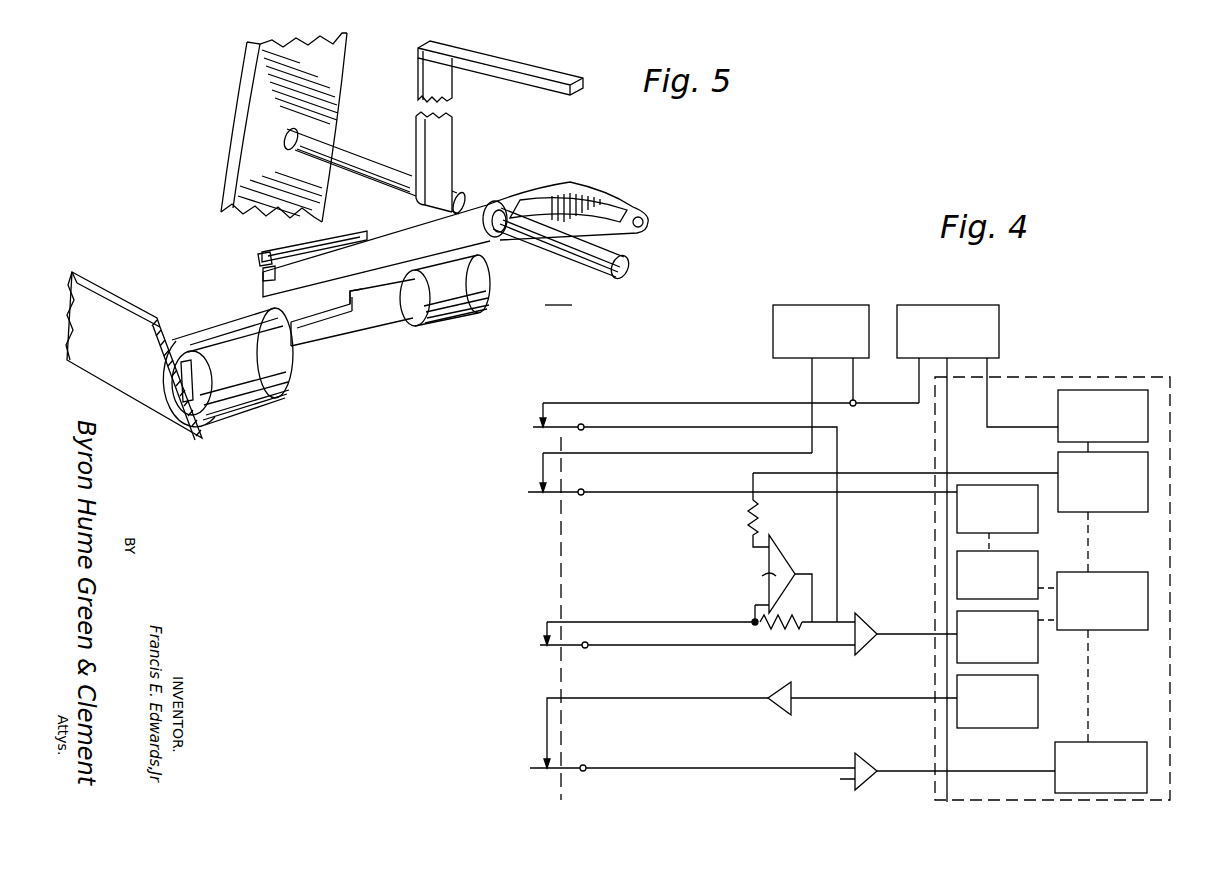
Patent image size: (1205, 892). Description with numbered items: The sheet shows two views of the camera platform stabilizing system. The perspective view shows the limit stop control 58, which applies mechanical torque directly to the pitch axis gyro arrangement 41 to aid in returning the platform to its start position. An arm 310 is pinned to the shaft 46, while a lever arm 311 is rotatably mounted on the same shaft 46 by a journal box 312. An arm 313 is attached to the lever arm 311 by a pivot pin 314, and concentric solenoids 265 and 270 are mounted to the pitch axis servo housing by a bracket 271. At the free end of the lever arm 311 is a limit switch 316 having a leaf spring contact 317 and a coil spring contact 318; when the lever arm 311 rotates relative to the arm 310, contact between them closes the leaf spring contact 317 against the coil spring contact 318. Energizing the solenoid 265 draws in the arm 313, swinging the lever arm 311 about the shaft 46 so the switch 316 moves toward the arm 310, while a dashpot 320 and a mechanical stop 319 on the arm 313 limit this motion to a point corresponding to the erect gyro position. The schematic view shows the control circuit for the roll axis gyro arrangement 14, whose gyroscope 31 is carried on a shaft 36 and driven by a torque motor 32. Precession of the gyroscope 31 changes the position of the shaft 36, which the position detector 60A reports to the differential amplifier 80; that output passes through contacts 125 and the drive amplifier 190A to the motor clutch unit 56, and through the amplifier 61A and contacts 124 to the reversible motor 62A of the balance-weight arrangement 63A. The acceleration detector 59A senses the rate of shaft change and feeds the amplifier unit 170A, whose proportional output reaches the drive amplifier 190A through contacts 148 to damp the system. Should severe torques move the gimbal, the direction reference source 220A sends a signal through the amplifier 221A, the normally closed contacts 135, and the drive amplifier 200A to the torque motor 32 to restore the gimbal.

In FIG. 5, the pitch axis gyro arrangement 41 is at (247, 172).
In FIG. 5, the shaft 46 is at (392, 149).
In FIG. 5, the arm 310 is at (541, 58).
In FIG. 5, the lever arm 311 is at (557, 188).
In FIG. 5, the journal box 312 is at (494, 205).
In FIG. 5, the pivot pin 314 is at (643, 222).
In FIG. 5, the limit switch 316 is at (261, 259).
In FIG. 5, the leaf spring contact 317 is at (329, 238).
In FIG. 5, the coil spring contact 318 is at (263, 273).
In FIG. 5, the mechanical stop 319 is at (350, 296).
In FIG. 5, the dashpot 320 is at (463, 310).
In FIG. 5, the arm 313 is at (389, 317).
In FIG. 5, the solenoid 270 is at (211, 340).
In FIG. 5, the bracket 271 is at (118, 297).
In FIG. 5, the solenoid 265 is at (205, 400).
In FIG. 5, the limit stop control 58 is at (558, 295).
In FIG. 4, the roll axis gyro arrangement 14 is at (1100, 362).
In FIG. 4, the amplifier 61A is at (821, 379).
In FIG. 4, the differential amplifier 80 is at (977, 366).
In FIG. 4, the position detector 60A is at (1103, 421).
In FIG. 4, the acceleration detector 59A is at (1103, 482).
In FIG. 4, the reversible motor 62A is at (997, 518).
In FIG. 4, the balance-weight arrangement 63A is at (1007, 575).
In FIG. 4, the motor clutch unit 56 is at (1007, 637).
In FIG. 4, the direction reference source 220A is at (997, 701).
In FIG. 4, the gyroscope 31 is at (1102, 657).
In FIG. 4, the torque motor 32 is at (1101, 767).
In FIG. 4, the shaft 36 is at (1089, 541).
In FIG. 4, the contacts 125 is at (549, 426).
In FIG. 4, the contacts 124 is at (551, 490).
In FIG. 4, the contacts 148 is at (553, 643).
In FIG. 4, the normally closed contacts 135 is at (543, 763).
In FIG. 4, the amplifier unit 170A is at (779, 567).
In FIG. 4, the drive amplifier 190A is at (870, 616).
In FIG. 4, the amplifier 221A is at (800, 683).
In FIG. 4, the drive amplifier 200A is at (870, 753).